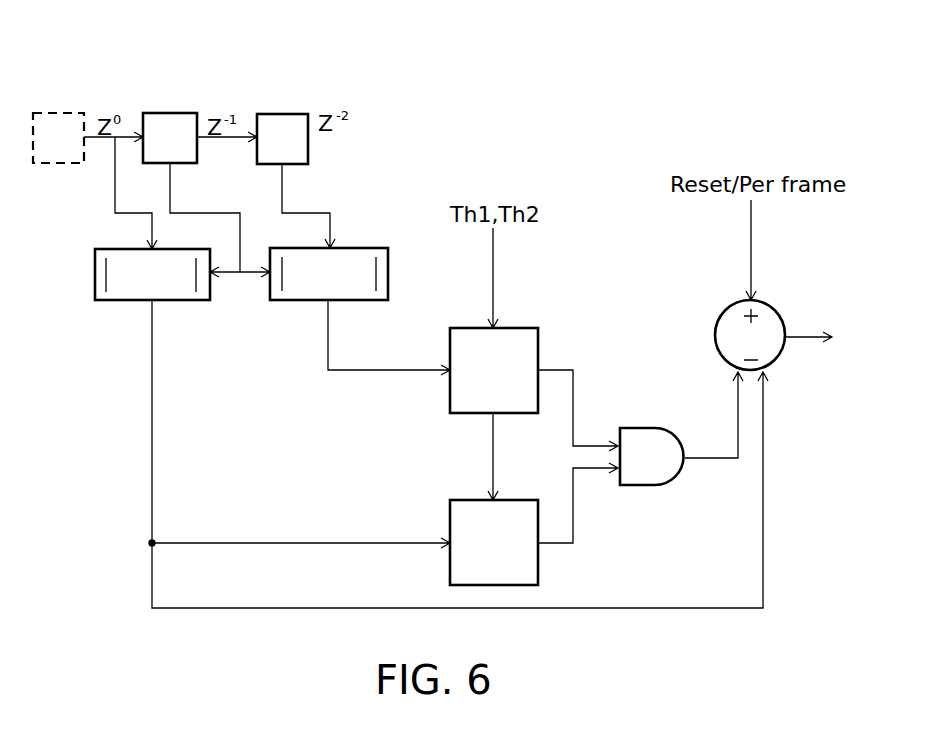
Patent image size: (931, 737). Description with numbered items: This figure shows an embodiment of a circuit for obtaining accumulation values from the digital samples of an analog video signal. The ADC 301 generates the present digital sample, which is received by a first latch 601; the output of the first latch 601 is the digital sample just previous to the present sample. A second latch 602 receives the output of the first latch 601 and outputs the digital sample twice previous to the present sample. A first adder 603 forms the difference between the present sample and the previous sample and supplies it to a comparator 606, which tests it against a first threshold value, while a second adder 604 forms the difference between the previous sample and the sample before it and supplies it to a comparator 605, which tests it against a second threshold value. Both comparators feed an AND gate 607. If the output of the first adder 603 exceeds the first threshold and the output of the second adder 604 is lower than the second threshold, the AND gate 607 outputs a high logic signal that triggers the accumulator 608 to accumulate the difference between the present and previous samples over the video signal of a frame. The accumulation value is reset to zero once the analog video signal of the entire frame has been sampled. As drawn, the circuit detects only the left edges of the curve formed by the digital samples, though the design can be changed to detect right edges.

The ADC 301 is at (60, 112).
The first latch 601 is at (170, 112).
The second latch 602 is at (282, 113).
The first adder 603 is at (118, 302).
The second adder 604 is at (297, 302).
The comparator 605 is at (450, 392).
The comparator 606 is at (450, 523).
The AND gate 607 is at (642, 428).
The accumulator 608 is at (780, 312).